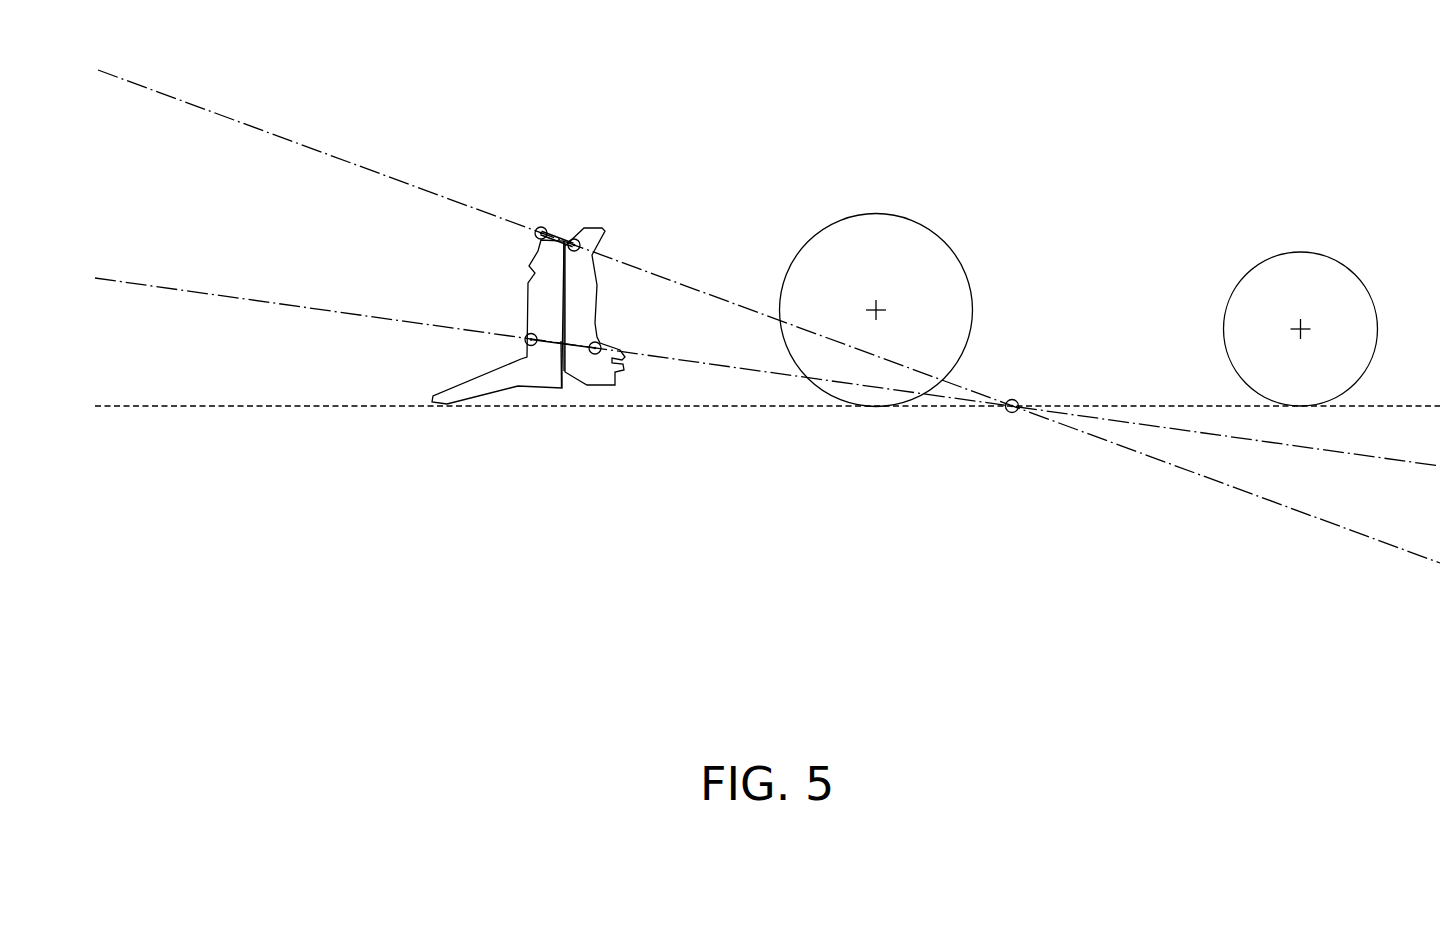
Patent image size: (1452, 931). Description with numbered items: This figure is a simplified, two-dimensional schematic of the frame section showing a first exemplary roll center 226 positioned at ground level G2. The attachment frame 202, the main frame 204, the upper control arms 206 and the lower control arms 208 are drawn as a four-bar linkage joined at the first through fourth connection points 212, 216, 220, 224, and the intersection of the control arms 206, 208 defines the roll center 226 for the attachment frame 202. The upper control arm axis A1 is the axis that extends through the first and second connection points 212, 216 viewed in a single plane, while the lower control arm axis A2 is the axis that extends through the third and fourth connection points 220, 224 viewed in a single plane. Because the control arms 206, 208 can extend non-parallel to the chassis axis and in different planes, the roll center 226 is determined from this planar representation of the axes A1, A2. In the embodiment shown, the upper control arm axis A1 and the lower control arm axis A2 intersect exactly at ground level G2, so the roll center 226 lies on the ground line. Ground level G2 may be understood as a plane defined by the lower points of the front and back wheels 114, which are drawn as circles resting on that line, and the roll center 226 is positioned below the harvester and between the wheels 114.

The wheels 114 is at (910, 215).
The attachment frame 202 is at (589, 392).
The main frame 204 is at (520, 289).
The upper control arms 206 is at (563, 240).
The lower control arms 208 is at (560, 342).
The first connection point 212 is at (581, 243).
The second connection point 216 is at (539, 228).
The third connection point 220 is at (602, 342).
The fourth connection point 224 is at (531, 348).
The roll center 226 is at (1013, 414).
The upper control arm axis A1 is at (312, 150).
The lower control arm axis A2 is at (232, 296).
The ground level G2 is at (288, 406).